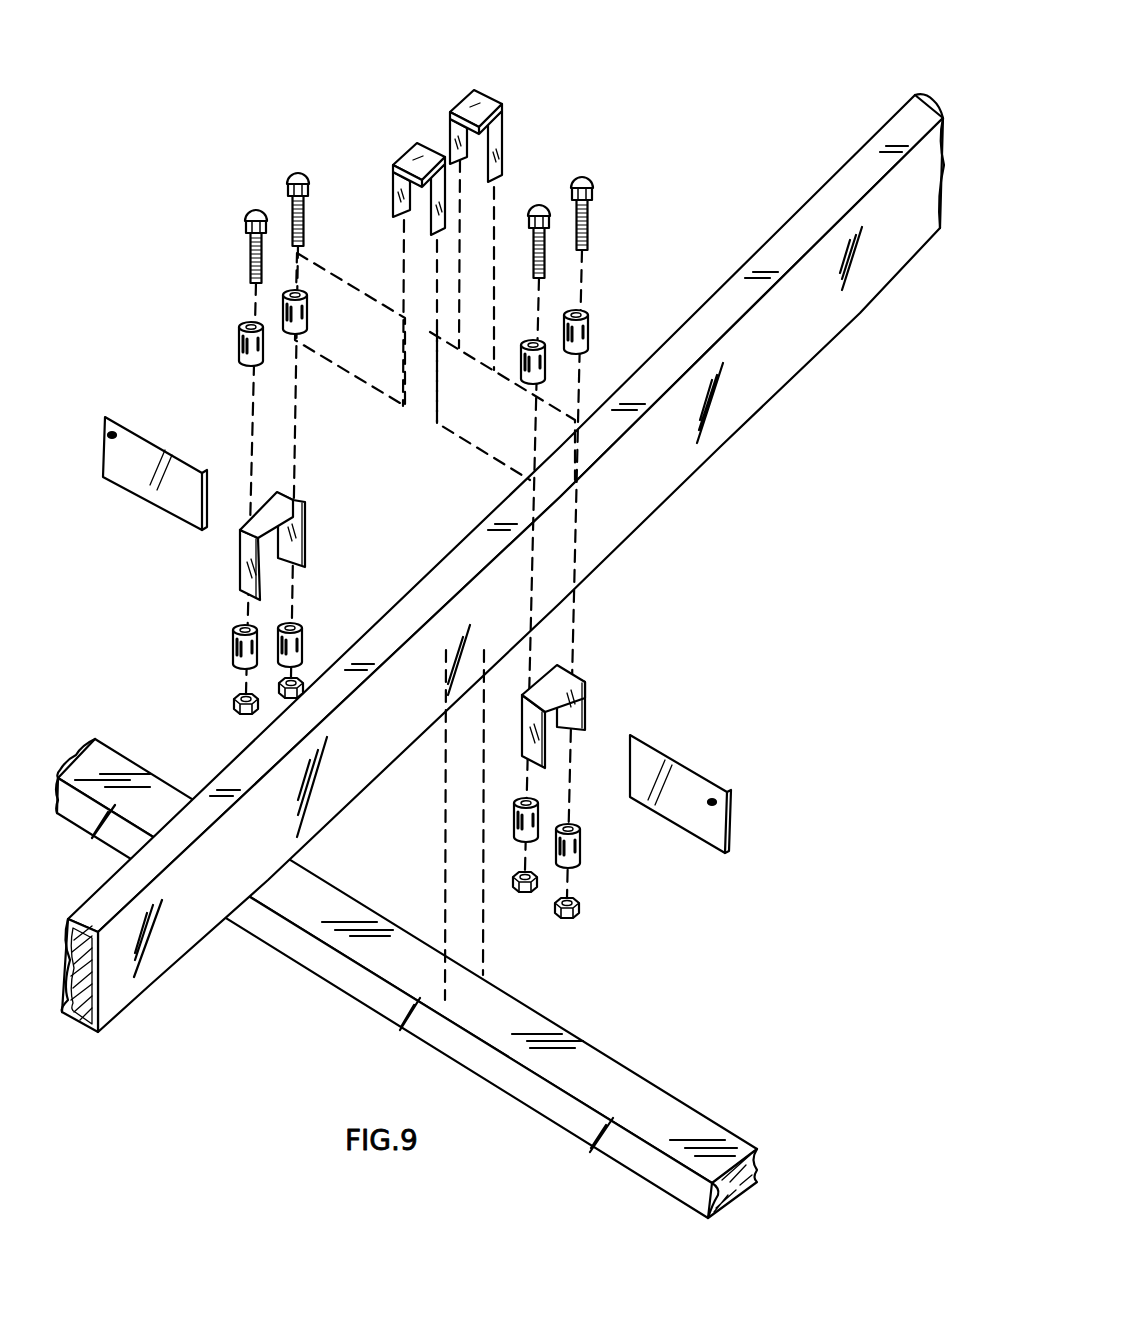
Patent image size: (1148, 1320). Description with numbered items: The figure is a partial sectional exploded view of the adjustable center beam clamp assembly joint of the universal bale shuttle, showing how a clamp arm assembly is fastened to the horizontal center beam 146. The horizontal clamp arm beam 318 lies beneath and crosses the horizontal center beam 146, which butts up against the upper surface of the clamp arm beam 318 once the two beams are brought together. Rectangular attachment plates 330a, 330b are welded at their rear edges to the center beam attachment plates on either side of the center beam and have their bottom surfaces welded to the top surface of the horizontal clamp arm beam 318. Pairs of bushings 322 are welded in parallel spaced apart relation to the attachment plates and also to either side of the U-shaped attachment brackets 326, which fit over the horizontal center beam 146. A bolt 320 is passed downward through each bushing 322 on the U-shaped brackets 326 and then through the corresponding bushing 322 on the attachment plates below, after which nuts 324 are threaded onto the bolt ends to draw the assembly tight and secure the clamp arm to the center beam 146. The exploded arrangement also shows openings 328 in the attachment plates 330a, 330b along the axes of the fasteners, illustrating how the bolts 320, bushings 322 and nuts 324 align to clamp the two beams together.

The horizontal center beam 146 is at (805, 313).
The horizontal clamp arm beam 318 is at (353, 977).
The bolt 320 is at (609, 142).
The bushing 322 is at (243, 330).
The nut 324 is at (248, 372).
The U-shaped attachment bracket 326 is at (433, 143).
The hole 328 is at (100, 427).
The rectangular attachment plate 330a is at (687, 787).
The rectangular attachment plate 330b is at (127, 487).